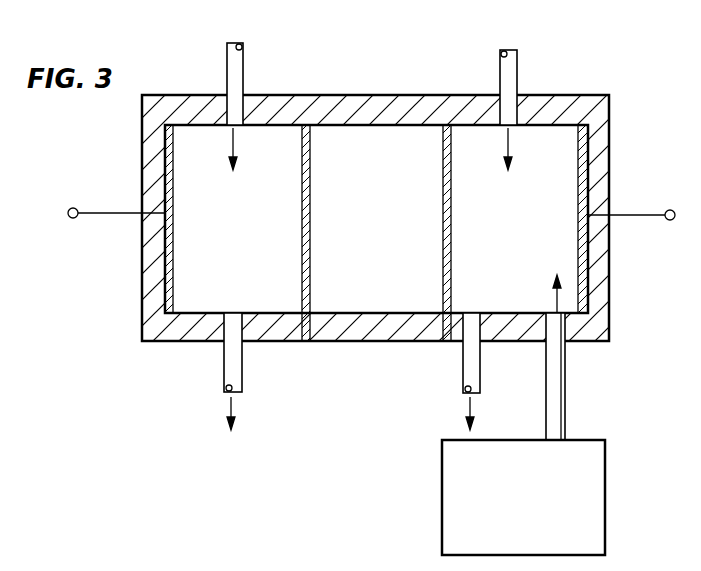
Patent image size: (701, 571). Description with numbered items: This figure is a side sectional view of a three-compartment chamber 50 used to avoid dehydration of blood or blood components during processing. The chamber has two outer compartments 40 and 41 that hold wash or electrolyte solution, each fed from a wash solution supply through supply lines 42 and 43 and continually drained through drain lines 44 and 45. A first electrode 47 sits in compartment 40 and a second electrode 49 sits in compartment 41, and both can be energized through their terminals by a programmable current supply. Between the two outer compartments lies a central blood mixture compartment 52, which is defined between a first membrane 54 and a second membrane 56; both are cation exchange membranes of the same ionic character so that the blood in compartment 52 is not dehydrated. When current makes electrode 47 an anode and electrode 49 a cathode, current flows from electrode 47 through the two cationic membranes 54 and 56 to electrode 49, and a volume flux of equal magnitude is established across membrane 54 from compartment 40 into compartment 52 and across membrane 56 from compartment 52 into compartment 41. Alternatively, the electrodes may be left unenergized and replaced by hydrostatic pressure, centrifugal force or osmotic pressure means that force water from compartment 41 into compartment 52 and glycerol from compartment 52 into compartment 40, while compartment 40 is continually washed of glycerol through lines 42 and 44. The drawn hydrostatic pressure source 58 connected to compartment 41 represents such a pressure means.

The compartment 40 is at (173, 300).
The compartment 41 is at (562, 263).
The line 42 is at (237, 62).
The line 43 is at (508, 70).
The drain line 44 is at (233, 360).
The drain line 45 is at (470, 373).
The first electrode 47 is at (169, 178).
The second electrode 49 is at (586, 198).
The three-compartment chamber 50 is at (423, 101).
The central blood mixture compartment 52 is at (378, 140).
The first membrane 54 is at (307, 297).
The second membrane 56 is at (443, 300).
The hydrostatic pressure source 58 is at (585, 448).